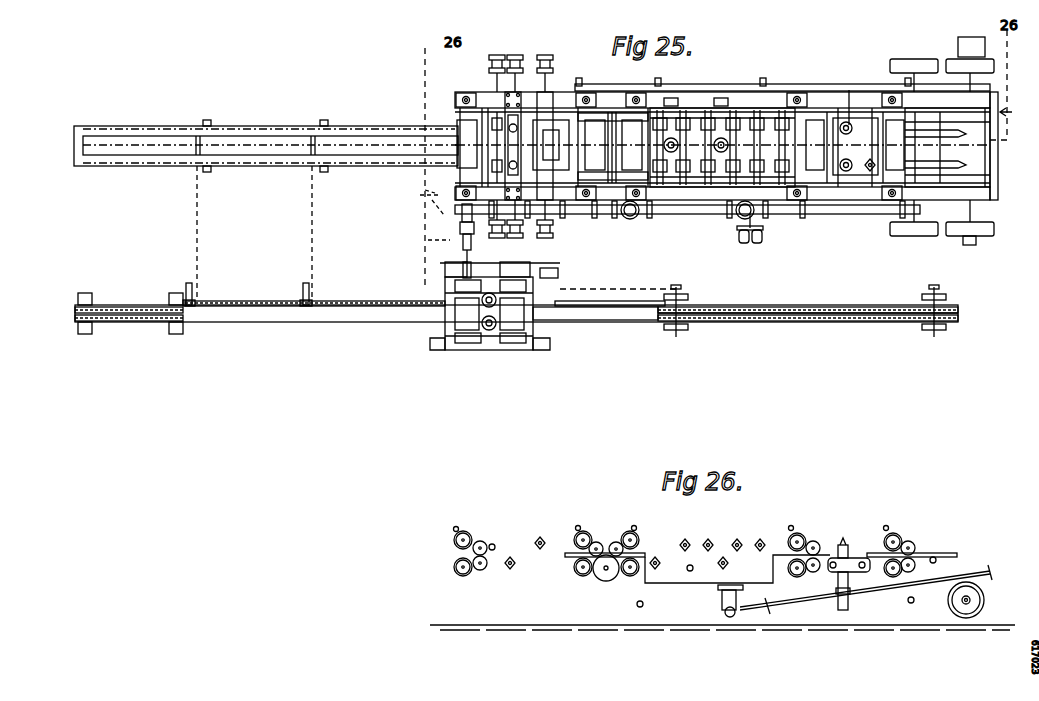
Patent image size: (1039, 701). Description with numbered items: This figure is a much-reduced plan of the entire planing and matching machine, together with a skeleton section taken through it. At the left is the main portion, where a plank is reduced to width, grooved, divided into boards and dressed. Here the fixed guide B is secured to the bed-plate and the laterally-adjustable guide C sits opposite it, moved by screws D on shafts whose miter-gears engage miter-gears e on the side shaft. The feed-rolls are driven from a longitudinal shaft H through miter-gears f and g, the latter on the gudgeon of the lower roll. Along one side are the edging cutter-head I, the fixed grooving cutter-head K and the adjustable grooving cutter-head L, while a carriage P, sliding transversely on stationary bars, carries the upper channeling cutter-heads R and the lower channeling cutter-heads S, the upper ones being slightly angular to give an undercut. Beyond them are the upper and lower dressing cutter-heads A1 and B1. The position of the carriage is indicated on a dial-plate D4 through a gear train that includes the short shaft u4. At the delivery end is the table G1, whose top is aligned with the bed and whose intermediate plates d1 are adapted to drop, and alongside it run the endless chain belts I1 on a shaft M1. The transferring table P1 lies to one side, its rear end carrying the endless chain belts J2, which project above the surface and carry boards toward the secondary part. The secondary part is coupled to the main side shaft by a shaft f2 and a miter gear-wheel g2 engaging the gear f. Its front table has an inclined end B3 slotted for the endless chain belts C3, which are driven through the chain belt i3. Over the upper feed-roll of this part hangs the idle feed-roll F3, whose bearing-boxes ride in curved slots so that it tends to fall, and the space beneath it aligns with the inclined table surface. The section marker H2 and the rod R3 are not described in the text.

In FIG. 25, the table G1 is at (262, 128).
In FIG. 25, the intermediate plates d1 is at (152, 143).
In FIG. 25, the endless chain belts I1 is at (200, 242).
In FIG. 25, the carriage P is at (678, 86).
In FIG. 26, the carriage P is at (718, 585).
In FIG. 25, the fixed grooving cutter-head K is at (840, 200).
In FIG. 25, the edging cutter-head I is at (872, 200).
In FIG. 25, the grooving cutter-head L is at (849, 80).
In FIG. 25, the screws D is at (935, 147).
In FIG. 25, the laterally-adjustable guide C is at (947, 147).
In FIG. 25, the fixed guide B is at (947, 148).
In FIG. 25, the miter-gears e is at (997, 165).
In FIG. 25, the section marker H H2 is at (1005, 110).
In FIG. 25, the shaft H is at (702, 218).
In FIG. 25, the miter-gear g is at (420, 197).
In FIG. 25, the miter-gear f is at (418, 218).
In FIG. 25, the shaft f2 is at (420, 248).
In FIG. 25, the miter gear-wheel g2 is at (478, 240).
In FIG. 25, the table P1 is at (253, 323).
In FIG. 25, the endless chain belts J2 is at (113, 306).
In FIG. 25, the shaft M1 is at (255, 304).
In FIG. 25, the idle feed-roll F3 is at (495, 352).
In FIG. 25, the chain belt i3 is at (618, 288).
In FIG. 25, the rod R3 is at (595, 323).
In FIG. 25, the endless chain belts C3 is at (838, 308).
In FIG. 25, the inclined end B3 is at (795, 323).
In FIG. 26, the lower dressing cutter-head B1 is at (511, 570).
In FIG. 26, the upper dressing cutter-head A1 is at (540, 536).
In FIG. 26, the lower channeling cutter-heads S is at (658, 586).
In FIG. 26, the upper channeling cutter-heads R is at (705, 538).
In FIG. 26, the dial-plate D4 is at (990, 568).
In FIG. 26, the short shaft u4 is at (965, 570).